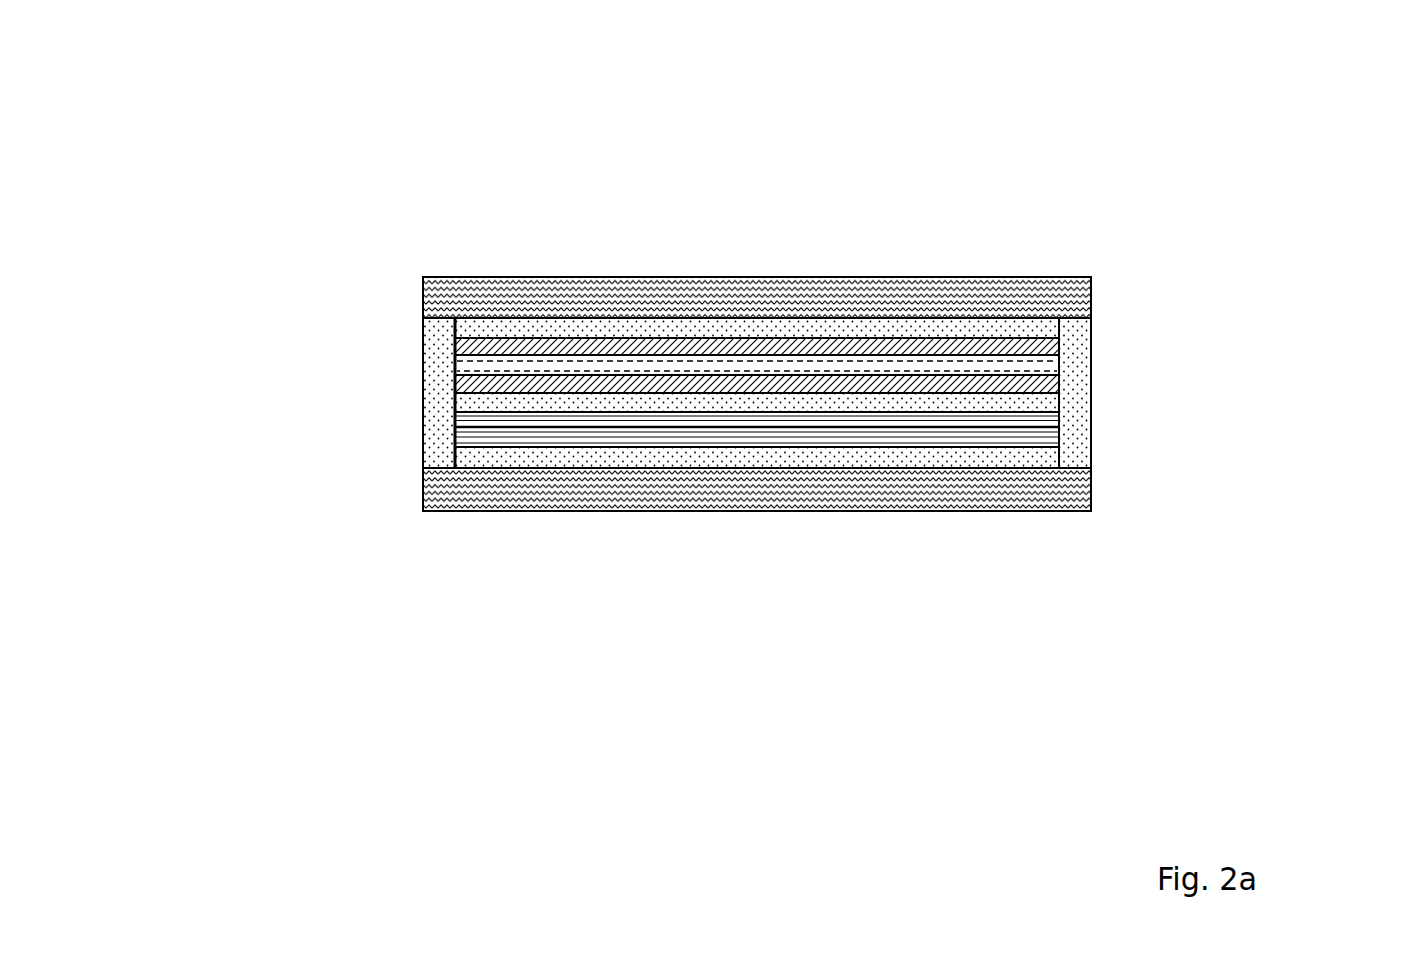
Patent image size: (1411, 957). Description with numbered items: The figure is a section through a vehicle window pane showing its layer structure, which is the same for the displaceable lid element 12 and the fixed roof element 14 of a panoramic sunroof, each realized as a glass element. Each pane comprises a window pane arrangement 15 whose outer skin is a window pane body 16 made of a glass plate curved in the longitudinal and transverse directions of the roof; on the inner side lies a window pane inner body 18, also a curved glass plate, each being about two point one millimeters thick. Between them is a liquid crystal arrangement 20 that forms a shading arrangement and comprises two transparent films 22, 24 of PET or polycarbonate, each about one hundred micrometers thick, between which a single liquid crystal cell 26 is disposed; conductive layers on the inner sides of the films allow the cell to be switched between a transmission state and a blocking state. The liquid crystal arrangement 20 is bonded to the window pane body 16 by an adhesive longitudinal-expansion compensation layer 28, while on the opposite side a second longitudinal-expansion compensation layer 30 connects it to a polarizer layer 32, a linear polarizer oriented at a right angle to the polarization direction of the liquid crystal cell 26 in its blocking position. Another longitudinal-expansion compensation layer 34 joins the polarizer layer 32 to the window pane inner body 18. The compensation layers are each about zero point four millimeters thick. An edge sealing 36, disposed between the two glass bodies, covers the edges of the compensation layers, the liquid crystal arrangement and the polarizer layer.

The lid element 12 is at (1010, 235).
The fixed roof element 14 is at (757, 394).
The window pane arrangement 15 is at (757, 394).
The window pane body 16 is at (1062, 293).
The window pane inner body 18 is at (1062, 490).
The liquid crystal arrangement 20 is at (1072, 368).
The film 22 is at (460, 337).
The film 24 is at (480, 388).
The liquid crystal cell 26 is at (495, 363).
The longitudinal-expansion compensation layer 28 is at (497, 332).
The second longitudinal-expansion compensation layer 30 is at (1045, 403).
The polarizer layer 32 is at (1042, 433).
The longitudinal-expansion compensation layer 34 is at (585, 458).
The edge sealing 36 is at (437, 355).